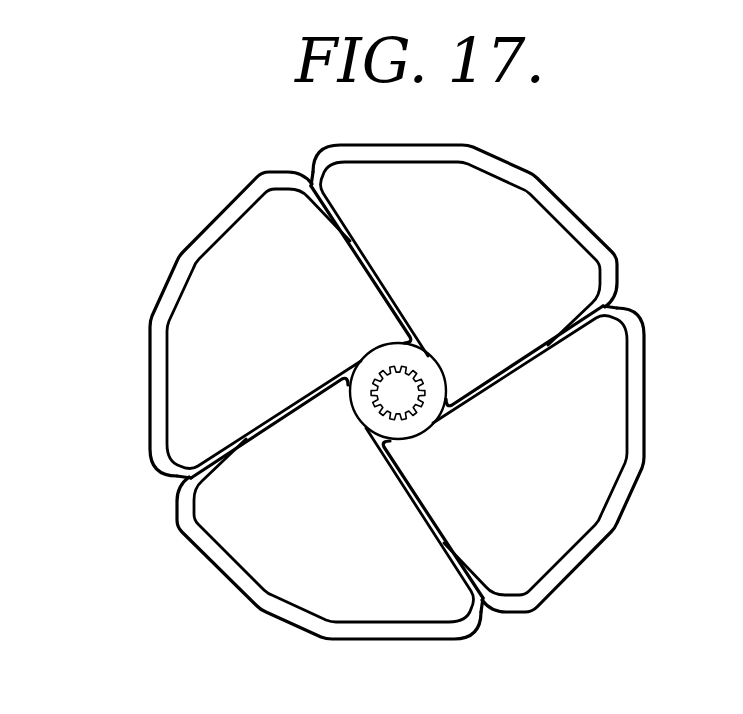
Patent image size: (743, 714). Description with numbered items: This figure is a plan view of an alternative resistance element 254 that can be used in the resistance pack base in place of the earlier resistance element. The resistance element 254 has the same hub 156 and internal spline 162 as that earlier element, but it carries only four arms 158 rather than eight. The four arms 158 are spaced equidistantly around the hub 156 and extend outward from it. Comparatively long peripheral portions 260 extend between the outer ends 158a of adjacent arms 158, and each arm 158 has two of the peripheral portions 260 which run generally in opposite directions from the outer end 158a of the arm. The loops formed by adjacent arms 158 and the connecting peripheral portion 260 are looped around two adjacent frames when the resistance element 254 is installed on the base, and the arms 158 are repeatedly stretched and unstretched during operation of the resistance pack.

The resistance element 254 is at (613, 178).
The peripheral portion 260 is at (452, 152).
The arm 158 is at (523, 365).
The outer end of arm 158a is at (308, 182).
The hub 156 is at (384, 355).
The internal spline 162 is at (418, 383).